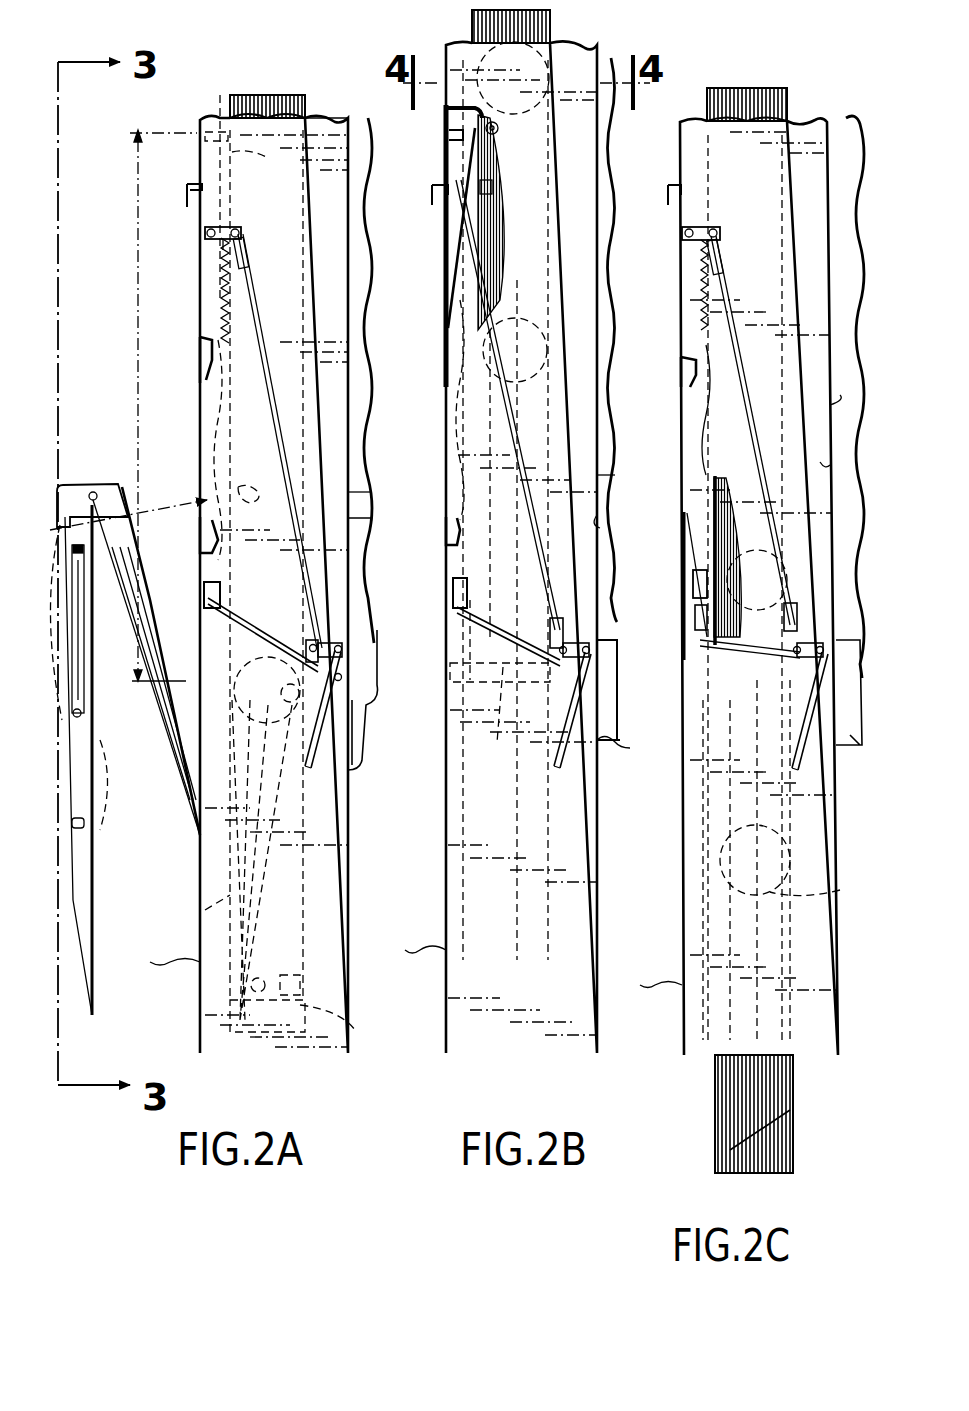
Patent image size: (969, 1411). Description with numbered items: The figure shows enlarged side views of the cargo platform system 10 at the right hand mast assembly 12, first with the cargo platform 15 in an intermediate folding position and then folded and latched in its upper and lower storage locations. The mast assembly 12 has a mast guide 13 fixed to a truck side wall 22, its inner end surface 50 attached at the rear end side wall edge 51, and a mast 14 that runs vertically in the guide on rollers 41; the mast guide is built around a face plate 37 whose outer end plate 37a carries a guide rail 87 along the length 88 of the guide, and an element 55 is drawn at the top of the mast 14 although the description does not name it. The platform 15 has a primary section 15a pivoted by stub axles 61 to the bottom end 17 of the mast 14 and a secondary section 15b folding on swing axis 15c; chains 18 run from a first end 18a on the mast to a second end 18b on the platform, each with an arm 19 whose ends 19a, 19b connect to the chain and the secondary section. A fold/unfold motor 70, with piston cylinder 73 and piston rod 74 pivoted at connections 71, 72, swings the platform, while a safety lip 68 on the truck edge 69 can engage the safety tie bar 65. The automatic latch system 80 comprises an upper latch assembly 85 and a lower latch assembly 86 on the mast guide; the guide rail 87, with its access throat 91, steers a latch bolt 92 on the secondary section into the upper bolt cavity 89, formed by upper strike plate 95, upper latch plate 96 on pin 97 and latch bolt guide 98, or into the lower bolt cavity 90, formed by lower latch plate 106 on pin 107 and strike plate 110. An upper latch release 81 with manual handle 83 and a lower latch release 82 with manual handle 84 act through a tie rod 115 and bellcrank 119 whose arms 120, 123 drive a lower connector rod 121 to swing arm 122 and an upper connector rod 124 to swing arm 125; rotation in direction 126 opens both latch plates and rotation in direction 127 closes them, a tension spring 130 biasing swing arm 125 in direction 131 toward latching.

In FIG. 2A, the cargo platform system 10 is at (100, 445).
In FIG. 2A, the mast assembly 12 is at (322, 100).
In FIG. 2B, the mast assembly 12 is at (602, 35).
In FIG. 2C, the mast assembly 12 is at (808, 98).
In FIG. 2A, the mast guide 13 is at (330, 205).
In FIG. 2B, the mast guide 13 is at (440, 180).
In FIG. 2C, the mast guide 13 is at (808, 150).
In FIG. 2A, the mast 14 is at (272, 95).
In FIG. 2B, the mast 14 is at (550, 20).
In FIG. 2C, the mast 14 is at (752, 88).
In FIG. 2B, the cargo platform 15 is at (522, 232).
In FIG. 2C, the cargo platform 15 is at (795, 835).
In FIG. 2A, the primary section 15a is at (156, 661).
In FIG. 2A, the secondary section 15b is at (98, 808).
In FIG. 2A, the swing axis 15c is at (100, 495).
In FIG. 2A, the bottom end 17 is at (355, 1030).
In FIG. 2C, the bottom end 17 is at (715, 1165).
In FIG. 2A, the chain 18 is at (98, 745).
In FIG. 2A, the chain end 18a is at (216, 470).
In FIG. 2A, the chain end 18b is at (84, 867).
In FIG. 2A, the arm 19 is at (95, 655).
In FIG. 2A, the arm end 19a is at (82, 712).
In FIG. 2A, the arm end 19b is at (84, 612).
In FIG. 2A, the side wall 22 is at (370, 412).
In FIG. 2B, the side wall 22 is at (610, 438).
In FIG. 2C, the side wall 22 is at (842, 280).
In FIG. 2A, the face plate 37 is at (350, 925).
In FIG. 2B, the face plate 37 is at (540, 958).
In FIG. 2C, the face plate 37 is at (820, 945).
In FIG. 2A, the outer end plate 37a is at (162, 977).
In FIG. 2B, the outer end plate 37a is at (419, 964).
In FIG. 2C, the outer end plate 37a is at (652, 1000).
In FIG. 2A, the roller 41 is at (313, 348).
In FIG. 2B, the roller 41 is at (478, 60).
In FIG. 2C, the roller 41 is at (820, 869).
In FIG. 2A, the inner end surface 50 is at (372, 492).
In FIG. 2B, the inner end surface 50 is at (615, 475).
In FIG. 2C, the inner end surface 50 is at (830, 405).
In FIG. 2A, the rear end side wall edge 51 is at (372, 518).
In FIG. 2B, the rear end side wall edge 51 is at (600, 520).
In FIG. 2C, the rear end side wall edge 51 is at (815, 452).
In FIG. 2A, the seal strip 55 is at (258, 95).
In FIG. 2C, the seal strip 55 is at (732, 88).
In FIG. 2A, the stub axle 61 is at (267, 975).
In FIG. 2B, the stub axle 61 is at (500, 686).
In FIG. 2C, the stub axle 61 is at (795, 1117).
In FIG. 2A, the safety tie bar 65 is at (300, 980).
In FIG. 2C, the safety tie bar 65 is at (780, 1176).
In FIG. 2A, the safety lip 68 is at (258, 1050).
In FIG. 2C, the safety lip 68 is at (737, 1175).
In FIG. 2A, the truck edge 69 is at (240, 1030).
In FIG. 2C, the truck edge 69 is at (750, 1173).
In FIG. 2A, the fold/unfold motor 70 is at (290, 822).
In FIG. 2A, the pivotal connection 71 is at (262, 860).
In FIG. 2A, the pivotal connection 72 is at (248, 905).
In FIG. 2A, the piston cylinder 73 is at (282, 878).
In FIG. 2A, the piston rod 74 is at (200, 900).
In FIG. 2B, the automatic latch system 80 is at (432, 228).
In FIG. 2C, the automatic latch system 80 is at (680, 628).
In FIG. 2A, the upper latch release 81 is at (165, 196).
In FIG. 2B, the upper latch release 81 is at (422, 180).
In FIG. 2C, the upper latch release 81 is at (662, 175).
In FIG. 2A, the lower latch release 82 is at (342, 768).
In FIG. 2B, the lower latch release 82 is at (568, 788).
In FIG. 2C, the lower latch release 82 is at (818, 778).
In FIG. 2A, the manual handle 83 is at (182, 186).
In FIG. 2B, the manual handle 83 is at (432, 198).
In FIG. 2C, the manual handle 83 is at (668, 195).
In FIG. 2A, the manual handle 84 is at (372, 748).
In FIG. 2B, the manual handle 84 is at (628, 712).
In FIG. 2C, the manual handle 84 is at (837, 750).
In FIG. 2A, the upper latch assembly 85 is at (165, 218).
In FIG. 2B, the upper latch assembly 85 is at (497, 185).
In FIG. 2A, the lower latch assembly 86 is at (248, 598).
In FIG. 2C, the lower latch assembly 86 is at (675, 665).
In FIG. 2A, the guide rail 87 is at (200, 372).
In FIG. 2B, the guide rail 87 is at (446, 535).
In FIG. 2C, the guide rail 87 is at (684, 535).
In FIG. 2A, the length 88 is at (133, 318).
In FIG. 2A, the upper bolt cavity 89 is at (264, 168).
In FIG. 2A, the lower bolt cavity 90 is at (360, 692).
In FIG. 2A, the access throat 91 is at (208, 445).
In FIG. 2B, the access throat 91 is at (445, 405).
In FIG. 2C, the access throat 91 is at (678, 410).
In FIG. 2A, the latch bolt 92 is at (85, 490).
In FIG. 2B, the latch bolt 92 is at (497, 165).
In FIG. 2C, the latch bolt 92 is at (728, 698).
In FIG. 2A, the upper strike plate 95 is at (220, 100).
In FIG. 2B, the upper strike plate 95 is at (449, 135).
In FIG. 2B, the upper latch plate 96 is at (495, 212).
In FIG. 2A, the pin 97 is at (205, 233).
In FIG. 2B, the latch bolt guide 98 is at (455, 258).
In FIG. 2C, the lower latch plate 106 is at (690, 605).
In FIG. 2A, the pin 107 is at (210, 580).
In FIG. 2C, the strike plate 110 is at (683, 735).
In FIG. 2A, the tie rod 115 is at (370, 615).
In FIG. 2A, the bellcrank 119 is at (365, 600).
In FIG. 2A, the bellcrank arm 120 is at (350, 722).
In FIG. 2A, the lower connector rod 121 is at (262, 640).
In FIG. 2B, the lower connector rod 121 is at (506, 622).
In FIG. 2A, the swing arm 122 is at (240, 600).
In FIG. 2A, the bellcrank arm 123 is at (304, 676).
In FIG. 2A, the upper connector rod 124 is at (290, 473).
In FIG. 2A, the swing arm 125 is at (232, 227).
In FIG. 2A, the arrow 126 is at (335, 622).
In FIG. 2B, the arrow 126 is at (586, 615).
In FIG. 2C, the arrow 126 is at (824, 618).
In FIG. 2A, the arrow 127 is at (362, 665).
In FIG. 2B, the arrow 127 is at (578, 692).
In FIG. 2A, the tension spring 130 is at (221, 300).
In FIG. 2A, the arrow 131 is at (257, 222).
In FIG. 2C, the arrow 131 is at (740, 235).